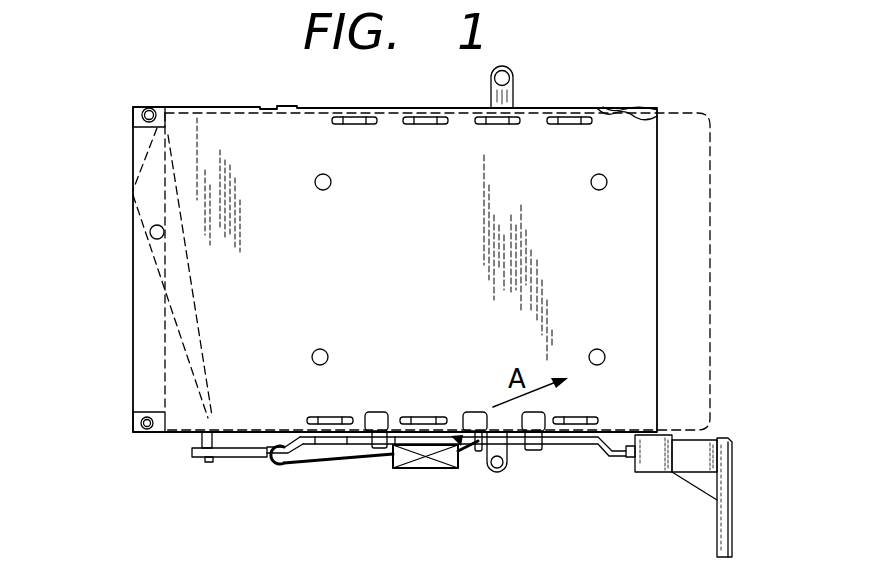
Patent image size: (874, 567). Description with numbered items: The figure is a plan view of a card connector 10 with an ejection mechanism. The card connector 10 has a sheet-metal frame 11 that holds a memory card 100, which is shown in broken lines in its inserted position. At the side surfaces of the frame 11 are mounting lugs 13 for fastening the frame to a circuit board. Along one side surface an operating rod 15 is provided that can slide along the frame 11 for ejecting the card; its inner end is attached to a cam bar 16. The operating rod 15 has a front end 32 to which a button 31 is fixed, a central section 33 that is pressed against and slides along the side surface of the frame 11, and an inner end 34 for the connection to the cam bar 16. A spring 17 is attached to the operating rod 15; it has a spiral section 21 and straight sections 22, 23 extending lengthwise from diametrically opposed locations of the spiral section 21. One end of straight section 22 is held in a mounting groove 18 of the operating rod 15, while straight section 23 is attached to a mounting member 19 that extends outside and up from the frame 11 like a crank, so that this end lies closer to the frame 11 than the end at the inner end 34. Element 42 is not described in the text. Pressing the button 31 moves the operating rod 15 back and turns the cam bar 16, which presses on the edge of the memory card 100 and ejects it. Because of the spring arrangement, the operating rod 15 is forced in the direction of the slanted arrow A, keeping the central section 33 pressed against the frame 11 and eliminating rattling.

The card connector 10 is at (112, 334).
The frame 11 is at (408, 198).
The mounting lugs 13 is at (516, 80).
The operating rod 15 is at (551, 455).
The cam bar 16 is at (150, 150).
The spring 17 is at (393, 478).
The mounting groove 18 is at (265, 445).
The mounting member 19 is at (458, 438).
The spiral section 21 is at (418, 472).
The straight section 22 is at (293, 463).
The straight section 23 is at (465, 465).
The button 31 is at (723, 488).
The front end 32 is at (612, 457).
The central section 33 is at (336, 430).
The inner end 34 is at (232, 458).
The bar 42 is at (192, 443).
The memory card 100 is at (678, 240).